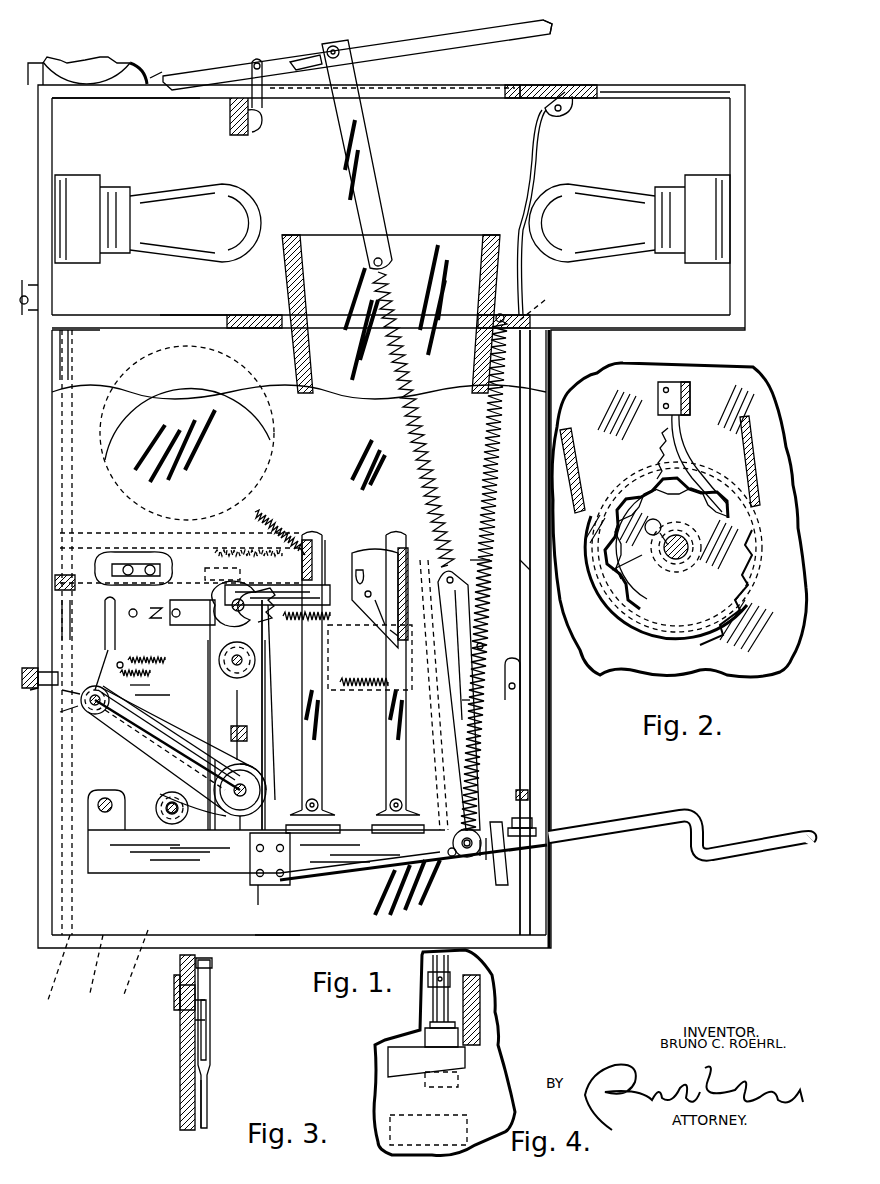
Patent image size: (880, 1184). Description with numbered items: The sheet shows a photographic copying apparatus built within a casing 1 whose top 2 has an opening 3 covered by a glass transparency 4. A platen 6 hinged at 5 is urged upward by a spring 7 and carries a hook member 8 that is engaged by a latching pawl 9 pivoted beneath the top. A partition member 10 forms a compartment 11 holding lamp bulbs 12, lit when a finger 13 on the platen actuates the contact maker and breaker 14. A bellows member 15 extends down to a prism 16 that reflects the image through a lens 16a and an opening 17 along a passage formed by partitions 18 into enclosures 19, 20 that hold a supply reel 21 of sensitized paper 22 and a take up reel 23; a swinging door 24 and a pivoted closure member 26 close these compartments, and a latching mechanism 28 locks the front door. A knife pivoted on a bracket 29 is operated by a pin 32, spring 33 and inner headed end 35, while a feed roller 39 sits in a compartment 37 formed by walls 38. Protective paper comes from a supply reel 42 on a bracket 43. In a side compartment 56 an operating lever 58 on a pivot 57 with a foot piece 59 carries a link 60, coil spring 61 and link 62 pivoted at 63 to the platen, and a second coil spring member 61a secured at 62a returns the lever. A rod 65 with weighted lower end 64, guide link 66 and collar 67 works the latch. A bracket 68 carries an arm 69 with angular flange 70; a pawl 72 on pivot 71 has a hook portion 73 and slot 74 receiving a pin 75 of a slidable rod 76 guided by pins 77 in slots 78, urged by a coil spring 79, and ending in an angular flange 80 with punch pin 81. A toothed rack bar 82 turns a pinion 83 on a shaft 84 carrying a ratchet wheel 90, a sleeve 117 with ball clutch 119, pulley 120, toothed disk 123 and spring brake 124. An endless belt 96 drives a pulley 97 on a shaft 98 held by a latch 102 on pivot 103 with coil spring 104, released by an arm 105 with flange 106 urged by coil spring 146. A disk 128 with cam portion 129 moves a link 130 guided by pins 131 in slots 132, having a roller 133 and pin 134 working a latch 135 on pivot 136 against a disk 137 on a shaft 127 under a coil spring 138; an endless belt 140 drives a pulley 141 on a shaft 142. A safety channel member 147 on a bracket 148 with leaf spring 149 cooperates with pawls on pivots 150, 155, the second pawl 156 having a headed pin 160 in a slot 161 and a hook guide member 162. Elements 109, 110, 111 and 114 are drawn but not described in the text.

In FIG. 1, the casing 1 is at (46, 178).
In FIG. 4, the casing 1 is at (482, 1010).
In FIG. 1, the top 2 is at (637, 95).
In FIG. 1, the opening 3 is at (548, 92).
In FIG. 1, the transparency 4 is at (512, 88).
In FIG. 1, the hinge 5 is at (158, 80).
In FIG. 1, the platen 6 is at (395, 47).
In FIG. 1, the spring 7 is at (300, 62).
In FIG. 1, the hook member 8 is at (552, 30).
In FIG. 1, the latching pawl 9 is at (580, 105).
In FIG. 1, the partition member 10 is at (182, 320).
In FIG. 1, the compartment 11 is at (108, 110).
In FIG. 1, the sources of illumination 12 is at (212, 210).
In FIG. 1, the finger 13 is at (252, 70).
In FIG. 1, the contact maker and breaker 14 is at (260, 122).
In FIG. 1, the bellows member 15 is at (285, 338).
In FIG. 1, the prism 16 is at (478, 626).
In FIG. 1, the lens 16a is at (370, 674).
In FIG. 1, the opening 17 is at (441, 695).
In FIG. 1, the partitions 18 is at (290, 680).
In FIG. 1, the enclosure 19 is at (138, 345).
In FIG. 1, the enclosure 20 is at (133, 964).
In FIG. 1, the supply reel 21 is at (150, 380).
In FIG. 1, the sensitized paper 22 is at (82, 470).
In FIG. 1, the take up reel 23 is at (86, 964).
In FIG. 1, the swinging door 24 is at (80, 345).
In FIG. 1, the pivoted closure member 26 is at (53, 969).
In FIG. 1, the latching mechanism 28 is at (30, 320).
In FIG. 1, the bracket 29 is at (65, 620).
In FIG. 1, the pin 32 is at (40, 677).
In FIG. 1, the spring 33 is at (34, 690).
In FIG. 1, the inner headed end 35 is at (52, 685).
In FIG. 1, the compartment 37 is at (128, 725).
In FIG. 1, the walls 38 is at (176, 690).
In FIG. 1, the feed roller 39 is at (150, 748).
In FIG. 1, the supply reel 42 is at (92, 68).
In FIG. 1, the bracket 43 is at (36, 75).
In FIG. 1, the compartment 56 is at (278, 935).
In FIG. 1, the pivot 57 is at (106, 800).
In FIG. 1, the operating lever 58 is at (322, 860).
In FIG. 4, the operating lever 58 is at (405, 1058).
In FIG. 1, the foot piece 59 is at (752, 861).
In FIG. 1, the link 60 is at (470, 740).
In FIG. 1, the coil spring 61 is at (402, 405).
In FIG. 1, the second coil spring member 61a is at (492, 405).
In FIG. 1, the link 62 is at (385, 185).
In FIG. 1, the securing point 62a is at (547, 301).
In FIG. 1, the pivot 63 is at (328, 48).
In FIG. 1, the weighted lower end 64 is at (536, 832).
In FIG. 4, the weighted lower end 64 is at (430, 1040).
In FIG. 1, the rod 65 is at (494, 645).
In FIG. 1, the guide link 66 is at (530, 822).
In FIG. 4, the guide link 66 is at (448, 965).
In FIG. 1, the collar 67 is at (530, 796).
In FIG. 4, the collar 67 is at (432, 1016).
In FIG. 1, the bracket 68 is at (465, 770).
In FIG. 1, the arm 69 is at (456, 700).
In FIG. 3, the arm 69 is at (206, 1102).
In FIG. 1, the angular flange 70 is at (403, 548).
In FIG. 3, the angular flange 70 is at (215, 962).
In FIG. 1, the pivot 71 is at (372, 590).
In FIG. 3, the pivot 71 is at (188, 1022).
In FIG. 1, the pawl 72 is at (378, 608).
In FIG. 3, the pawl 72 is at (208, 1042).
In FIG. 1, the shouldered hook portion 73 is at (358, 568).
In FIG. 1, the slot 74 is at (400, 548).
In FIG. 1, the pin 75 is at (407, 602).
In FIG. 3, the pin 75 is at (182, 1000).
In FIG. 1, the slidable rod 76 is at (105, 562).
In FIG. 3, the slidable rod 76 is at (178, 990).
In FIG. 1, the pins 77 is at (128, 564).
In FIG. 1, the slots 78 is at (150, 564).
In FIG. 1, the coil spring 79 is at (275, 524).
In FIG. 1, the angular flange 80 is at (62, 578).
In FIG. 1, the punch pin 81 is at (70, 600).
In FIG. 1, the toothed rack bar 82 is at (272, 830).
In FIG. 2, the toothed rack bar 82 is at (735, 668).
In FIG. 1, the pinion 83 is at (475, 576).
In FIG. 2, the pinion 83 is at (650, 520).
In FIG. 1, the shaft 84 is at (248, 885).
In FIG. 2, the shaft 84 is at (642, 575).
In FIG. 2, the toothed ratchet wheel 90 is at (660, 610).
In FIG. 1, the endless belt 96 is at (262, 680).
In FIG. 2, the endless belt 96 is at (568, 440).
In FIG. 1, the pulley 97 is at (306, 622).
In FIG. 1, the shaft 98 is at (248, 608).
In FIG. 1, the latch 102 is at (283, 600).
In FIG. 1, the pivot 103 is at (307, 540).
In FIG. 1, the coil spring 104 is at (285, 520).
In FIG. 1, the arm 105 is at (326, 785).
In FIG. 1, the flange 106 is at (328, 545).
In FIG. 1, the rod 109 is at (270, 660).
In FIG. 1, the shaft 110 is at (229, 725).
In FIG. 1, the frame 111 is at (221, 715).
In FIG. 1, the pulley 114 is at (236, 680).
In FIG. 2, the sleeve 117 is at (675, 565).
In FIG. 1, the ball clutch 119 is at (262, 760).
In FIG. 1, the pulley 120 is at (210, 838).
In FIG. 1, the toothed disk 123 is at (240, 828).
In FIG. 2, the toothed disk 123 is at (632, 592).
In FIG. 1, the spring brake 124 is at (248, 736).
In FIG. 2, the spring brake 124 is at (705, 468).
In FIG. 1, the shaft 127 is at (84, 708).
In FIG. 1, the disk 128 is at (164, 668).
In FIG. 1, the cam portion 129 is at (150, 640).
In FIG. 1, the link 130 is at (157, 608).
In FIG. 1, the pins 131 is at (133, 608).
In FIG. 1, the slots 132 is at (145, 642).
In FIG. 1, the roller 133 is at (225, 620).
In FIG. 1, the pin 134 is at (120, 615).
In FIG. 1, the latch 135 is at (95, 663).
In FIG. 1, the pivot 136 is at (138, 672).
In FIG. 1, the disk 137 is at (166, 735).
In FIG. 1, the coil spring 138 is at (145, 694).
In FIG. 1, the endless belt 140 is at (210, 600).
In FIG. 1, the pulley 141 is at (230, 560).
In FIG. 1, the shaft 142 is at (162, 810).
In FIG. 1, the coil spring 146 is at (366, 690).
In FIG. 1, the channel member 147 is at (520, 740).
In FIG. 1, the bracket 148 is at (535, 665).
In FIG. 1, the leaf spring 149 is at (532, 640).
In FIG. 1, the pivot 150 is at (458, 855).
In FIG. 1, the pivot 155 is at (455, 846).
In FIG. 1, the second pawl 156 is at (466, 838).
In FIG. 1, the headed pin 160 is at (478, 858).
In FIG. 1, the slot 161 is at (486, 860).
In FIG. 1, the hook guide member 162 is at (498, 880).